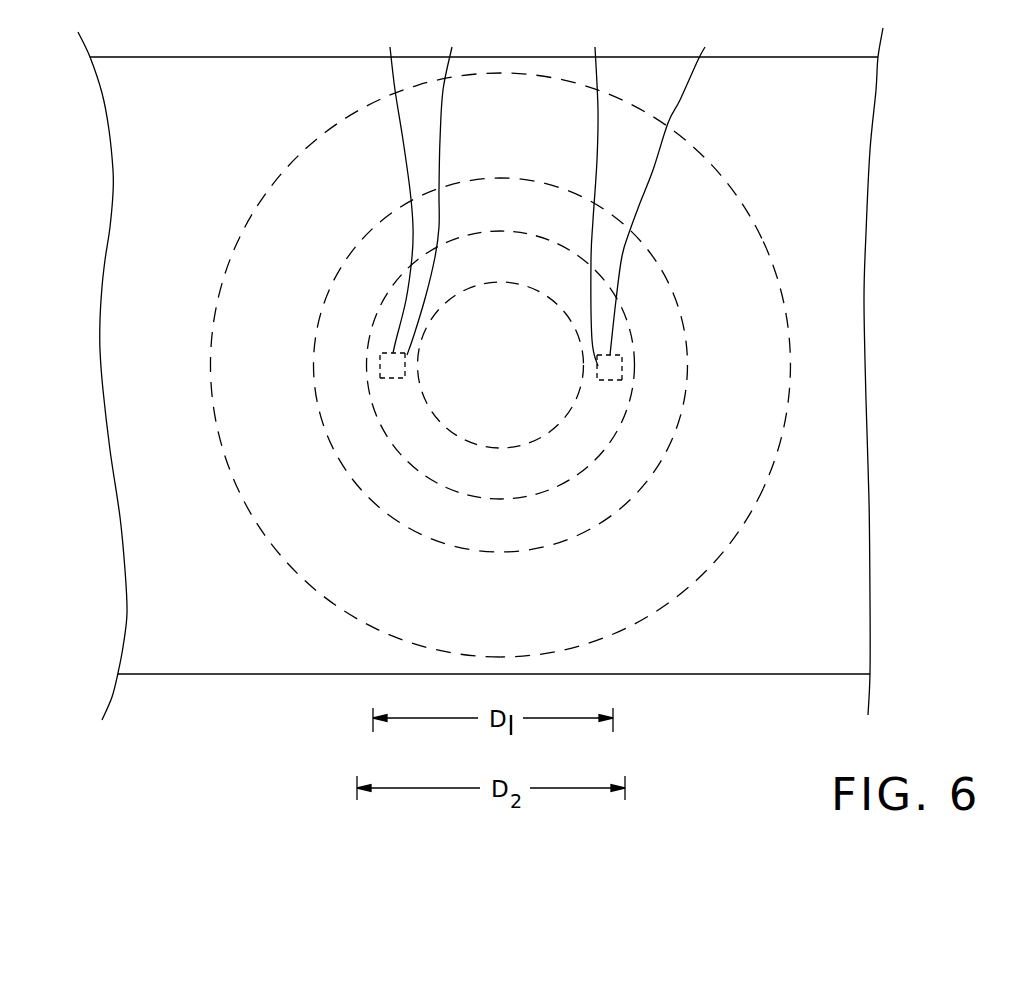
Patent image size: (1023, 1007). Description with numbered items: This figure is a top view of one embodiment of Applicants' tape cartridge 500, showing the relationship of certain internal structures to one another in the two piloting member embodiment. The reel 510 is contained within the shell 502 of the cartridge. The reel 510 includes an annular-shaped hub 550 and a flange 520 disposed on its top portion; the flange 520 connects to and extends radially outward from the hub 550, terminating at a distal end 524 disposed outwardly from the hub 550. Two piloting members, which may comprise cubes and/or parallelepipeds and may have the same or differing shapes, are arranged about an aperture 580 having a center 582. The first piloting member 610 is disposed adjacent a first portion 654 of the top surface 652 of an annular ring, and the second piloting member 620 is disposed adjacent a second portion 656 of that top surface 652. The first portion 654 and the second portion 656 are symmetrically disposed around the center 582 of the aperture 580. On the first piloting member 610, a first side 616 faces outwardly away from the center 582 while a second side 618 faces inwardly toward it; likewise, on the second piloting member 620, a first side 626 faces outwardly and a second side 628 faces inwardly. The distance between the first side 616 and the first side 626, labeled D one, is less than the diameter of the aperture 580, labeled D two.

The tape cartridge 500 is at (657, 685).
The shell 502 is at (820, 520).
The reel 510 is at (705, 148).
The flange 520 is at (698, 550).
The distal end 524 is at (780, 278).
The hub 550 is at (643, 274).
The aperture 580 is at (395, 283).
The center 582 is at (500, 367).
The first piloting member 610 is at (392, 24).
The first side 616 is at (380, 356).
The second side 618 is at (460, 24).
The second piloting member 620 is at (673, 186).
The first side 626 is at (623, 357).
The second side 628 is at (596, 192).
The top surface 652 is at (494, 258).
The first portion 654 is at (373, 376).
The second portion 656 is at (630, 373).